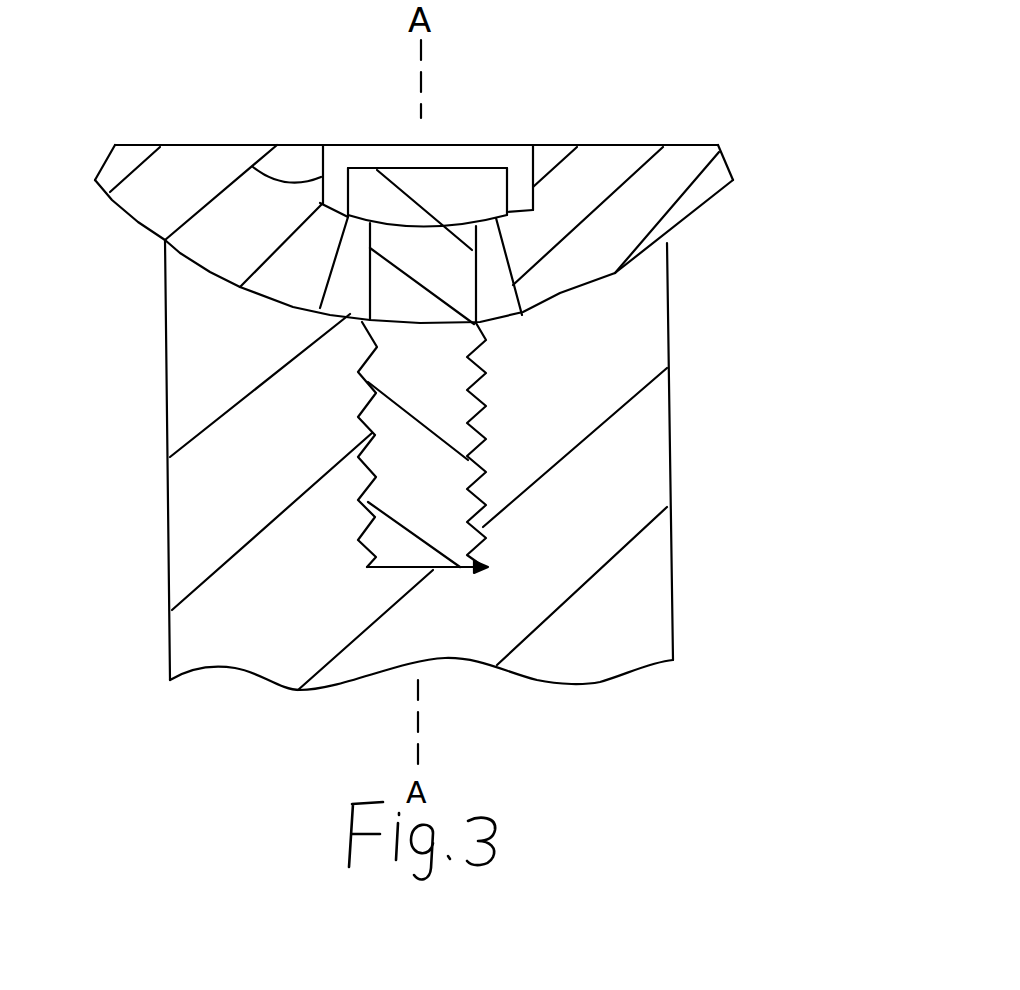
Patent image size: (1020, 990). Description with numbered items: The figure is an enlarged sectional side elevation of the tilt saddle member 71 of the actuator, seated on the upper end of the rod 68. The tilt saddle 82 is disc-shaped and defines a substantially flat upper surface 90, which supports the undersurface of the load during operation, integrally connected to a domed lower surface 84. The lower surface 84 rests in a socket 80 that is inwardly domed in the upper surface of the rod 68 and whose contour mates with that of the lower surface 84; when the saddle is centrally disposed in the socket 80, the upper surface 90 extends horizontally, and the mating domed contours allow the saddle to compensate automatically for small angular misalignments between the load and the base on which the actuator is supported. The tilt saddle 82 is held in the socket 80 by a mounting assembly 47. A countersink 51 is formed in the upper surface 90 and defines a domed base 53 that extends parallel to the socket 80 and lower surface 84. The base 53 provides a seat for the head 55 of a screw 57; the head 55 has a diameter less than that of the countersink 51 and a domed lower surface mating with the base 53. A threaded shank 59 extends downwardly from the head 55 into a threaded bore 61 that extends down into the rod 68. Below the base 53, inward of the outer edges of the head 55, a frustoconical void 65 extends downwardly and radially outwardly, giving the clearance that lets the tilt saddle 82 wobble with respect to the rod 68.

The mounting assembly 47 is at (503, 168).
The countersink 51 is at (253, 167).
The domed base 53 is at (340, 207).
The head 55 is at (437, 165).
The screw 57 is at (378, 163).
The threaded shank 59 is at (493, 397).
The threaded bore 61 is at (385, 476).
The frustoconical void 65 is at (509, 257).
The rod 68 is at (170, 542).
The tilt saddle member 71 is at (688, 144).
The socket 80 is at (215, 276).
The tilt saddle 82 is at (733, 152).
The domed lower surface 84 is at (692, 218).
The upper surface 90 is at (597, 147).